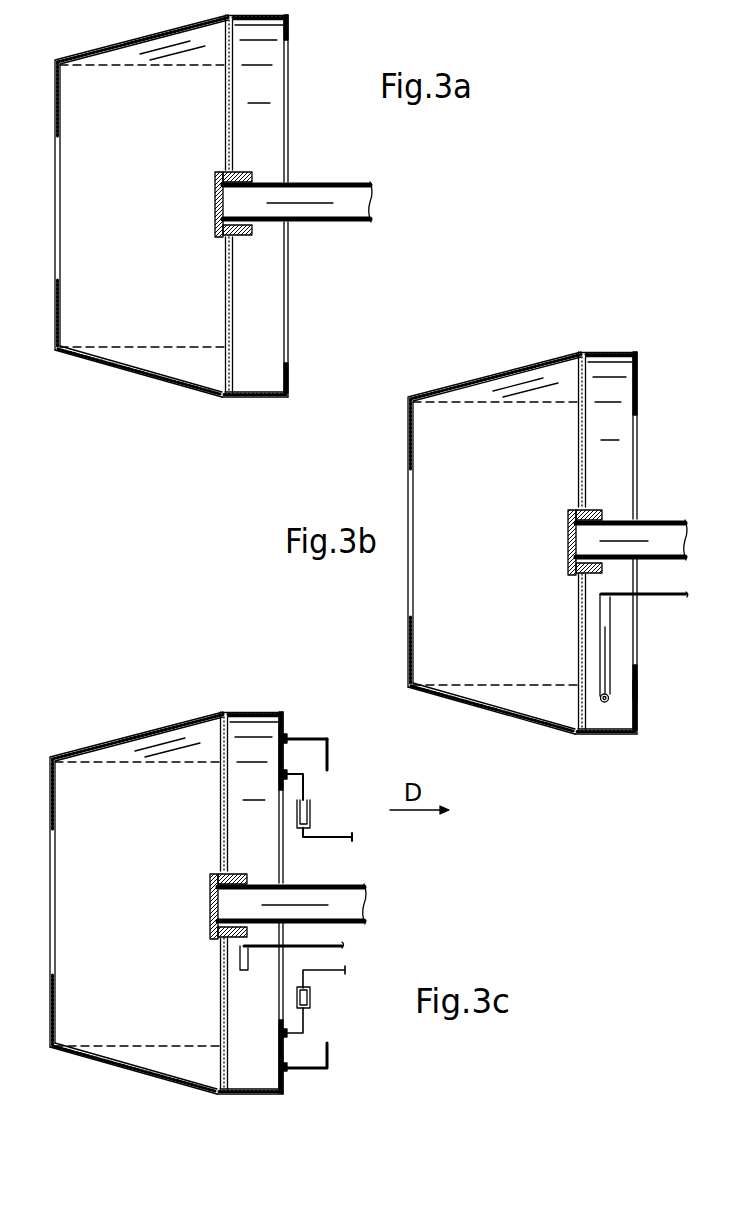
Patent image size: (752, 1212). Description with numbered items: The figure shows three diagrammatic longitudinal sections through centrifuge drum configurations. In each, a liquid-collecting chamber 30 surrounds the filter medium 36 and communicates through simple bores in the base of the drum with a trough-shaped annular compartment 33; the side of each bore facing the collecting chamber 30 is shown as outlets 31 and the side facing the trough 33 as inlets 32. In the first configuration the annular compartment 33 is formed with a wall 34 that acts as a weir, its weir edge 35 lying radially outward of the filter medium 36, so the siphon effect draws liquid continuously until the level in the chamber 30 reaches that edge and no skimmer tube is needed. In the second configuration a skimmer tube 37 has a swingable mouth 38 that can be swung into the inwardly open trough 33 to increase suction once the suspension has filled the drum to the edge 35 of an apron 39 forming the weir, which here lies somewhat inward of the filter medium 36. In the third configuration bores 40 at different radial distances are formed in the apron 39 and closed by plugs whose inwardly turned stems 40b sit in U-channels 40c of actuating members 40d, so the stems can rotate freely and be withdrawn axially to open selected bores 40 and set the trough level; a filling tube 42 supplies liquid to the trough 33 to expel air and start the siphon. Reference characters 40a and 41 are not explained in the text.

In FIG. 3A, the liquid-collecting chamber 30 is at (142, 362).
In FIG. 3B, the liquid-collecting chamber 30 is at (493, 695).
In FIG. 3C, the liquid-collecting chamber 30 is at (135, 1062).
In FIG. 3A, the outlets 31 is at (217, 397).
In FIG. 3B, the outlets 31 is at (567, 730).
In FIG. 3C, the outlets 31 is at (217, 1092).
In FIG. 3A, the inlets 32 is at (237, 397).
In FIG. 3B, the inlets 32 is at (587, 733).
In FIG. 3C, the inlets 32 is at (233, 1093).
In FIG. 3A, the annular compartment 33 is at (263, 380).
In FIG. 3B, the annular compartment 33 is at (617, 717).
In FIG. 3C, the annular compartment 33 is at (267, 1077).
In FIG. 3A, the wall 34 is at (288, 382).
In FIG. 3B, the wall 34 is at (609, 543).
In FIG. 3C, the wall 34 is at (253, 903).
In FIG. 3A, the weir edge 35 is at (287, 358).
In FIG. 3B, the weir edge 35 is at (638, 662).
In FIG. 3A, the filter medium 36 is at (118, 343).
In FIG. 3B, the filter medium 36 is at (510, 683).
In FIG. 3C, the filter medium 36 is at (155, 1045).
In FIG. 3B, the skimmer tube 37 is at (605, 623).
In FIG. 3B, the swingable mouth 38 is at (607, 703).
In FIG. 3B, the apron 39 is at (638, 688).
In FIG. 3C, the apron 39 is at (285, 1052).
In FIG. 3C, the bores 40 is at (280, 1063).
In FIG. 3C, the fastener bar 40a is at (293, 732).
In FIG. 3C, the stems 40b is at (330, 760).
In FIG. 3C, the U-channels 40c is at (313, 813).
In FIG. 3C, the actuating members 40d is at (345, 842).
In FIG. 3C, the clip 41 is at (312, 993).
In FIG. 3C, the filling tube 42 is at (342, 937).